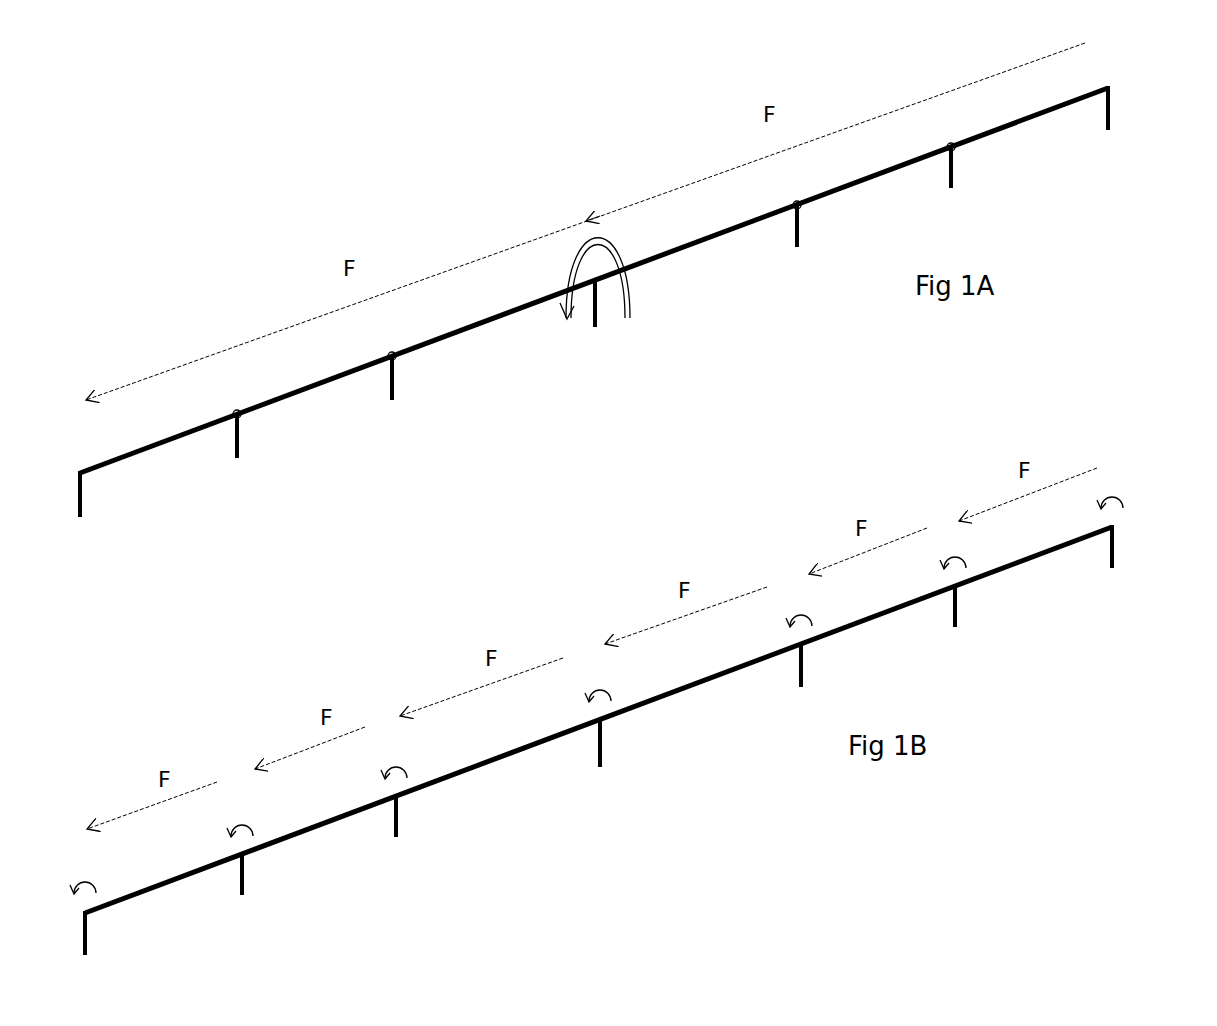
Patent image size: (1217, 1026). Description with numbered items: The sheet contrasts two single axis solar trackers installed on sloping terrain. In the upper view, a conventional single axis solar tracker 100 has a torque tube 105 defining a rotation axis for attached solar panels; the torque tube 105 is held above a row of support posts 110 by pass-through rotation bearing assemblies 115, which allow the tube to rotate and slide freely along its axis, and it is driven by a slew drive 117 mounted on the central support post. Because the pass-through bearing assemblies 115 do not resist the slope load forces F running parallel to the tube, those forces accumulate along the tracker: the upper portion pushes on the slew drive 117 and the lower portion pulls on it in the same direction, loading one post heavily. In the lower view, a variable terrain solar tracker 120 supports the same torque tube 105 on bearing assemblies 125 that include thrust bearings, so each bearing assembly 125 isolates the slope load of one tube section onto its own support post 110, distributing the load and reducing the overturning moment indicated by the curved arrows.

In FIG. 1A, the conventional single axis solar tracker 100 is at (475, 452).
In FIG. 1A, the torque tube 105 is at (445, 337).
In FIG. 1B, the torque tube 105 is at (507, 750).
In FIG. 1A, the support post 110 is at (82, 515).
In FIG. 1B, the support post 110 is at (87, 952).
In FIG. 1A, the pass-through rotation bearing assembly 115 is at (234, 412).
In FIG. 1A, the slew drive 117 is at (596, 274).
In FIG. 1B, the variable terrain solar tracker 120 is at (620, 836).
In FIG. 1B, the bearing assembly 125 is at (244, 855).